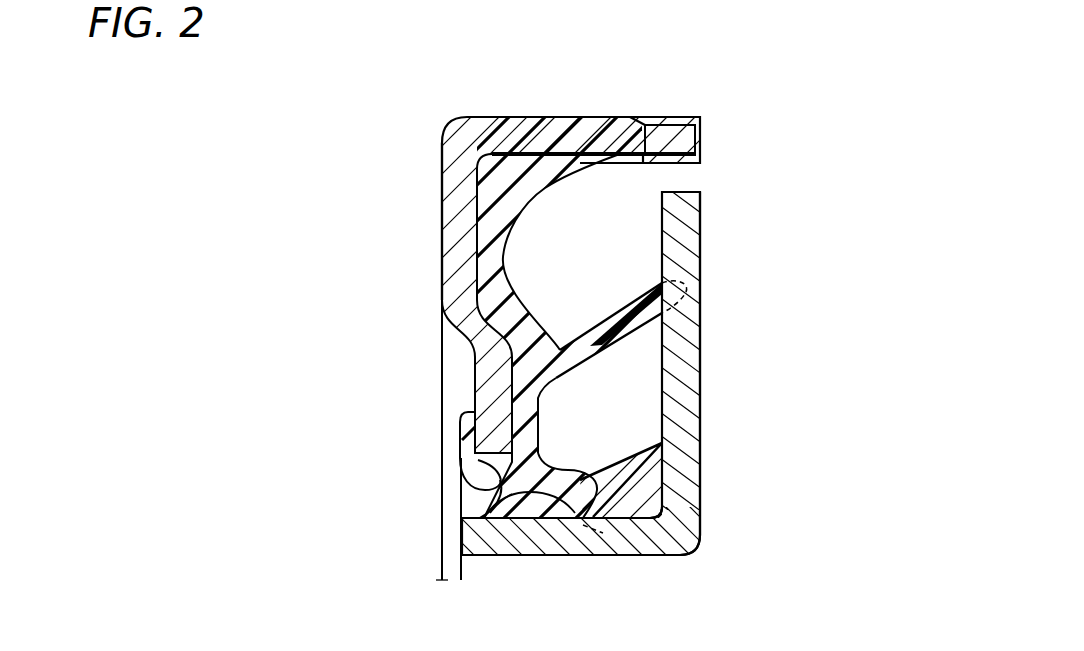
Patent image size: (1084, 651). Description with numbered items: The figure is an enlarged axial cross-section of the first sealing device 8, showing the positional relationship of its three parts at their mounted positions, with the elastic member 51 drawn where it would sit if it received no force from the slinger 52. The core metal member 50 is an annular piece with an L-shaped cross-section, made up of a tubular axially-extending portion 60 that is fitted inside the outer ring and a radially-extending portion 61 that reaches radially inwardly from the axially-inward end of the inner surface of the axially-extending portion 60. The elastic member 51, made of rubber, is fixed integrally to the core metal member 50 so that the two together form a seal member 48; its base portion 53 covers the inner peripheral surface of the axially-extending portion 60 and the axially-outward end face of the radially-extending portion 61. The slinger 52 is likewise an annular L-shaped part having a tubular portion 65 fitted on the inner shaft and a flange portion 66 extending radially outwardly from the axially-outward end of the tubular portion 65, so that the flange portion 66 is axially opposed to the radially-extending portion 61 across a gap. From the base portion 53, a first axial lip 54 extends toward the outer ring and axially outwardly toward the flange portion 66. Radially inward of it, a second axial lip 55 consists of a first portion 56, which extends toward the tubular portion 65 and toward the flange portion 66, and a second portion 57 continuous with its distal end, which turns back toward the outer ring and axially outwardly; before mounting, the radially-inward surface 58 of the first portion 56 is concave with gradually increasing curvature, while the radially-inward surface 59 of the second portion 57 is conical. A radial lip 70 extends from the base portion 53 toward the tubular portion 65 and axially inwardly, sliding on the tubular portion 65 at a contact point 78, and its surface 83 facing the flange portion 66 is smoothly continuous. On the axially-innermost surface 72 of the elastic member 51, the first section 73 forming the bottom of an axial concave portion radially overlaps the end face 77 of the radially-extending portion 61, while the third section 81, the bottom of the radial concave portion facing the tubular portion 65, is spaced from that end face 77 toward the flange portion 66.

The first sealing device 8 is at (426, 302).
The seal member 48 is at (447, 127).
The core metal member 50 is at (460, 190).
The elastic member 51 is at (530, 187).
The slinger 52 is at (690, 357).
The base portion 53 is at (533, 373).
The first axial lip 54 is at (612, 338).
The second axial lip 55 is at (665, 487).
The first portion 56 is at (574, 456).
The second portion 57 is at (660, 508).
The radially-inward surface of the first portion 58 is at (560, 525).
The radially-inward surface of the second portion 59 is at (660, 548).
The axially-extending portion 60 is at (574, 138).
The radially-extending portion 61 is at (455, 262).
The tubular portion 65 is at (623, 543).
The flange portion 66 is at (700, 322).
The radial lip 70 is at (458, 541).
The axially-innermost surface 72 is at (458, 474).
The first section 73 is at (462, 489).
The end face 77 is at (458, 437).
The contact point 78 is at (487, 518).
The third section 81 is at (538, 518).
The surface 83 is at (497, 518).